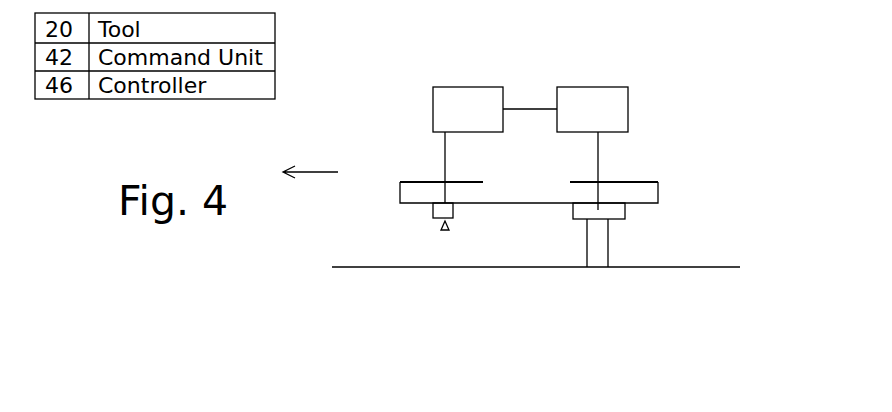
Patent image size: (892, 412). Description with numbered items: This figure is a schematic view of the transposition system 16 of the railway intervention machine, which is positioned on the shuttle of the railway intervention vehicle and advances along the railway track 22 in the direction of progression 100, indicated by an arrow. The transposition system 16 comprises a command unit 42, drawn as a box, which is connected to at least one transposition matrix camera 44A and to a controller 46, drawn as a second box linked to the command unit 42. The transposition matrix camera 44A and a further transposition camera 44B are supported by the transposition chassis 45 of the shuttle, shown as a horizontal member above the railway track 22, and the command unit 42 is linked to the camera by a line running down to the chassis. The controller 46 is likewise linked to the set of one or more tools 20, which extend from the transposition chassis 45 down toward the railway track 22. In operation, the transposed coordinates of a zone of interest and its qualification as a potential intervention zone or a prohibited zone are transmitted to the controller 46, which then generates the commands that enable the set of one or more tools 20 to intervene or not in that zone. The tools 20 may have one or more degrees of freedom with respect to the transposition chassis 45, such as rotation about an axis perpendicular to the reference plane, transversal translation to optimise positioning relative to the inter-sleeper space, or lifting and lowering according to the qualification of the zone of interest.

The transposition system 16 is at (522, 217).
The set of one or more tools 20 is at (596, 250).
The railway track 22 is at (718, 267).
The command unit 42 is at (490, 97).
The transposition matrix camera 44A is at (390, 268).
The transposition camera 44B is at (453, 205).
The transposition chassis 45 is at (649, 186).
The controller 46 is at (573, 97).
The direction of progression 100 is at (323, 172).